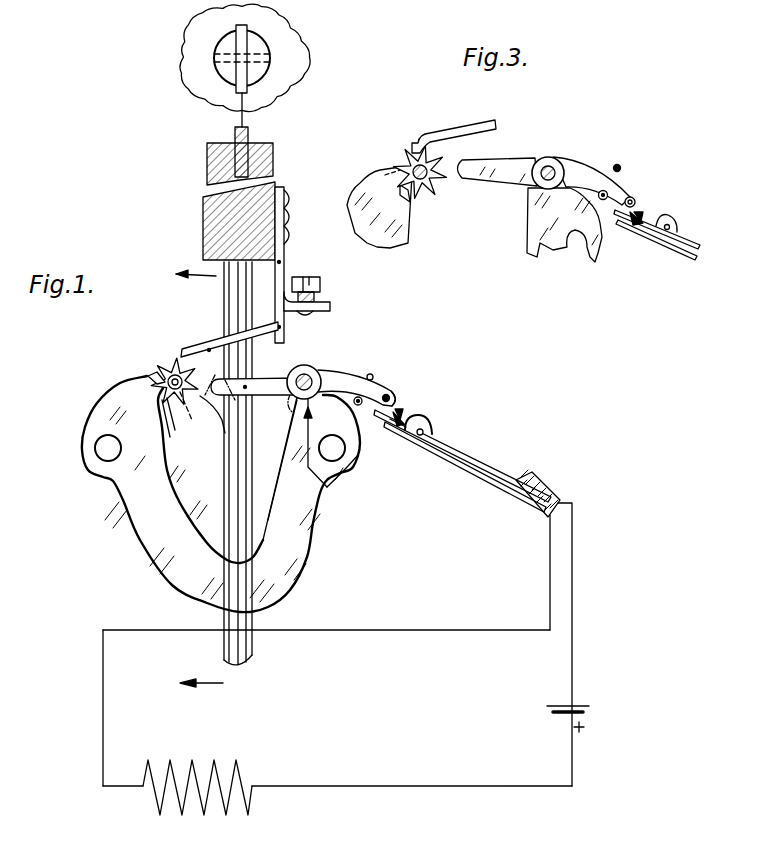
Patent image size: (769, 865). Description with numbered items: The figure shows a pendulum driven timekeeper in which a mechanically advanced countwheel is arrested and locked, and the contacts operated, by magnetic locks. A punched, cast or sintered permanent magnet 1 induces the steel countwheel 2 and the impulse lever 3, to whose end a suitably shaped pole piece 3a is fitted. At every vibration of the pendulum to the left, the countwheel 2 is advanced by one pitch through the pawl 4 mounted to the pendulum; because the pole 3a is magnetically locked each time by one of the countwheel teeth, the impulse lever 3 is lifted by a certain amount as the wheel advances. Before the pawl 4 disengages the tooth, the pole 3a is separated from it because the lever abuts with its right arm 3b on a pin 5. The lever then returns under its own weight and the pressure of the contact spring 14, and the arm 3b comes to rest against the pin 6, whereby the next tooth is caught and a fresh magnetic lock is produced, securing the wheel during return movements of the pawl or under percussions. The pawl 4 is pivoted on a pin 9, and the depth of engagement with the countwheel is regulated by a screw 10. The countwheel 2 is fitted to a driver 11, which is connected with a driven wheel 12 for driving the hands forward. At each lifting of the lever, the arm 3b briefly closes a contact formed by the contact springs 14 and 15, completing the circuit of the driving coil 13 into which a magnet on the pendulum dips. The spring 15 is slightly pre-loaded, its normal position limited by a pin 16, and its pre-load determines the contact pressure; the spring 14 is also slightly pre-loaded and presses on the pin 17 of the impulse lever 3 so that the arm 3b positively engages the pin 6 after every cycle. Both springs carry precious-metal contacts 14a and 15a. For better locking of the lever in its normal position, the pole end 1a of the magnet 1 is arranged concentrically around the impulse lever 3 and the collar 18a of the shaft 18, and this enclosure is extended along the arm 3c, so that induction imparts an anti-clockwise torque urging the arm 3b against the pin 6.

In FIG. 1, the permanent magnet 1 is at (134, 500).
In FIG. 3, the permanent magnet 1 is at (537, 238).
In FIG. 1, the pole end 1a is at (330, 484).
In FIG. 1, the countwheel 2 is at (178, 360).
In FIG. 3, the countwheel 2 is at (413, 150).
In FIG. 1, the impulse lever 3 is at (306, 369).
In FIG. 3, the impulse lever 3 is at (502, 174).
In FIG. 1, the pole piece 3a is at (222, 402).
In FIG. 1, the right arm 3b is at (395, 396).
In FIG. 3, the right arm 3b is at (598, 182).
In FIG. 1, the arm 3c is at (254, 401).
In FIG. 1, the pawl 4 is at (209, 349).
In FIG. 3, the pawl 4 is at (455, 129).
In FIG. 1, the pin 5 is at (360, 405).
In FIG. 3, the pin 5 is at (604, 199).
In FIG. 1, the pin 6 is at (388, 394).
In FIG. 3, the pin 6 is at (617, 164).
In FIG. 1, the pin 9 is at (283, 262).
In FIG. 1, the screw 10 is at (312, 286).
In FIG. 1, the driver 11 is at (164, 380).
In FIG. 1, the driven wheel 12 is at (168, 405).
In FIG. 1, the driving coil 13 is at (197, 799).
In FIG. 1, the contact spring 14 is at (455, 442).
In FIG. 3, the contact spring 14 is at (684, 236).
In FIG. 1, the contact 14a is at (432, 417).
In FIG. 1, the contact spring 15 is at (450, 468).
In FIG. 1, the contact 15a is at (398, 430).
In FIG. 1, the pin 16 is at (420, 435).
In FIG. 1, the pin 17 is at (397, 397).
In FIG. 3, the pin 17 is at (632, 197).
In FIG. 1, the shaft 18 is at (298, 396).
In FIG. 1, the collar 18a is at (370, 377).